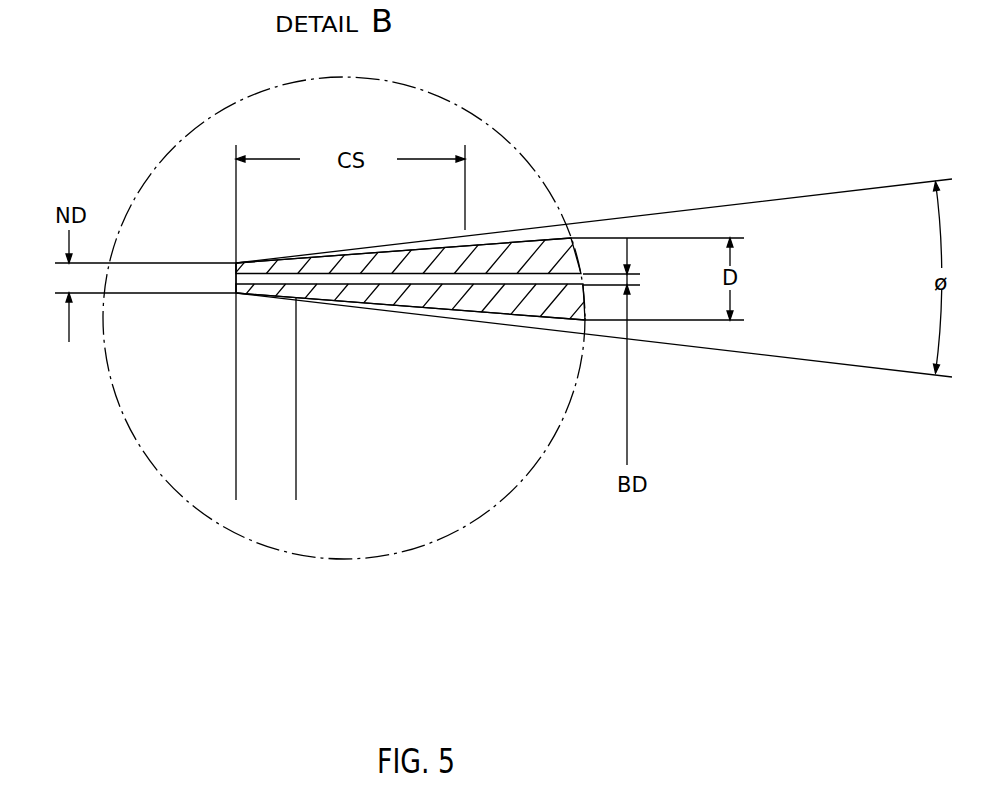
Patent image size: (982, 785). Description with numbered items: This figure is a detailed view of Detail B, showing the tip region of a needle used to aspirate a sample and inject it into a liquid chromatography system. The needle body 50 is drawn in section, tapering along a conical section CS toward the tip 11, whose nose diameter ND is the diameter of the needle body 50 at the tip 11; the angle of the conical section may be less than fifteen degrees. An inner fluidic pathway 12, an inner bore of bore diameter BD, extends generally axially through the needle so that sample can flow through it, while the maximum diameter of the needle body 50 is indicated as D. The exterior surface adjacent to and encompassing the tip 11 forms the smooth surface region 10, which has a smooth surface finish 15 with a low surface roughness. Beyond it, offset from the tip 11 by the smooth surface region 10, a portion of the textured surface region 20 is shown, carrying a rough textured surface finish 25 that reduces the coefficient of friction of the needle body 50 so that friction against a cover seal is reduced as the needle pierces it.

The smooth surface region 10 is at (167, 419).
The tip 11 is at (236, 266).
The inner fluidic pathway 12 is at (327, 278).
The smooth surface finish 15 is at (272, 298).
The textured surface region 20 is at (296, 498).
The rough textured surface finish 25 is at (355, 305).
The needle body 50 is at (443, 247).